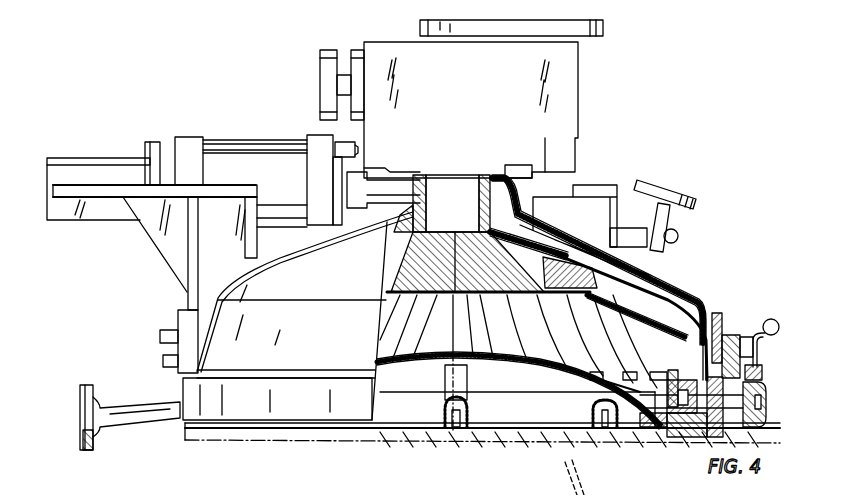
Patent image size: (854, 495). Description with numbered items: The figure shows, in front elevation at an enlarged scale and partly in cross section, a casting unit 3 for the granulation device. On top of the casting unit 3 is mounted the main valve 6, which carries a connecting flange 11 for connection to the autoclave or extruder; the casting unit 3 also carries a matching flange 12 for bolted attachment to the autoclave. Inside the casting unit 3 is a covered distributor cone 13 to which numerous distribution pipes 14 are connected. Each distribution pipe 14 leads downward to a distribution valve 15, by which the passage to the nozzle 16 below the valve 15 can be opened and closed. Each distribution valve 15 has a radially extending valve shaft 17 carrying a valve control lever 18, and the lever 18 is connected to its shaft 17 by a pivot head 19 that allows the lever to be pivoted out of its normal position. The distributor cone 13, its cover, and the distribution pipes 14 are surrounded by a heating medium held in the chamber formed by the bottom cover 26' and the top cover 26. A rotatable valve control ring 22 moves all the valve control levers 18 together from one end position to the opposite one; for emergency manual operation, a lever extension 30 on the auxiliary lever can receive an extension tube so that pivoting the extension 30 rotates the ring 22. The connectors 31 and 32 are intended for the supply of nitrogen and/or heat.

The casting unit 3 is at (698, 281).
The main valve 6 is at (397, 190).
The connecting flange 11 is at (604, 31).
The flange 12 is at (653, 433).
The distributor cone 13 is at (441, 243).
The distribution pipes 14 is at (680, 302).
The distribution valve 15 is at (671, 430).
The nozzle 16 is at (688, 432).
The valve shaft 17 is at (718, 403).
The valve control lever 18 is at (758, 349).
The pivot head 19 is at (768, 401).
The valve control ring 22 is at (740, 336).
The top cover 26 is at (599, 252).
The bottom cover 26' is at (520, 390).
The lever extension 30 is at (678, 238).
The connector 31 is at (97, 445).
The connector 32 is at (696, 193).